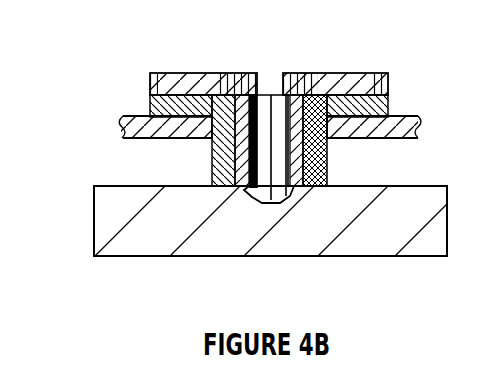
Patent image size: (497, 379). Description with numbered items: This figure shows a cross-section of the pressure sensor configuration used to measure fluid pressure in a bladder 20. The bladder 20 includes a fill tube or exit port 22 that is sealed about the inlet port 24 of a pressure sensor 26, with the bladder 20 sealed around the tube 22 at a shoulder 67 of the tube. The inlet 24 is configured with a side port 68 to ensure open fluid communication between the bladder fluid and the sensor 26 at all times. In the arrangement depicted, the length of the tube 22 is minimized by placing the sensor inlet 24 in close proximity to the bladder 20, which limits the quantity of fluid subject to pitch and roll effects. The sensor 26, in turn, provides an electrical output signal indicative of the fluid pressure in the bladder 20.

The bladder 20 is at (139, 116).
The fill tube or exit port 22 is at (320, 148).
The inlet port 24 is at (233, 150).
The pressure sensor 26 is at (118, 215).
The shoulder 67 is at (403, 120).
The side port 68 is at (284, 92).